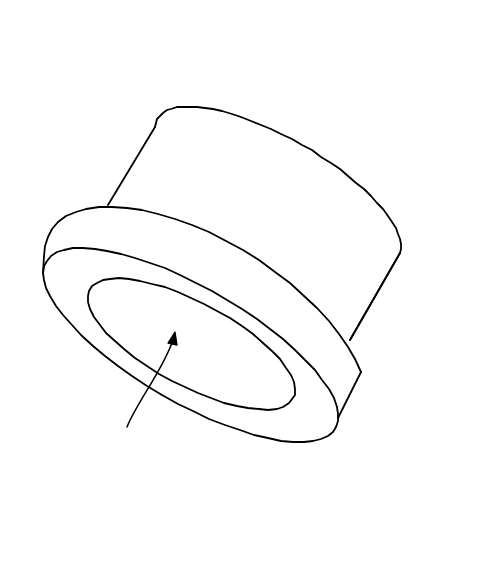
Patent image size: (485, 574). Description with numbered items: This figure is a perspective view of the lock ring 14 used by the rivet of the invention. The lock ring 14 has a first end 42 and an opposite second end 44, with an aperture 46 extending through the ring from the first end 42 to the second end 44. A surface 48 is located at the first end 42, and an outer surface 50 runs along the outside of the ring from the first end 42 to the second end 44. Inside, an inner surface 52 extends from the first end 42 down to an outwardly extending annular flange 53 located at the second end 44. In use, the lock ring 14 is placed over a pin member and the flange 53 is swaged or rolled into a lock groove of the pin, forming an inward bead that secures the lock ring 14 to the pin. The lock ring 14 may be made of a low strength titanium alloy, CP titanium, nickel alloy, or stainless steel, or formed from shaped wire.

The lock ring 14 is at (134, 71).
The first end 42 is at (197, 106).
The second end 44 is at (73, 297).
The aperture 46 is at (147, 393).
The surface 48 is at (317, 152).
The outer surface 50 is at (350, 300).
The inner surface 52 is at (233, 373).
The annular flange 53 is at (337, 390).